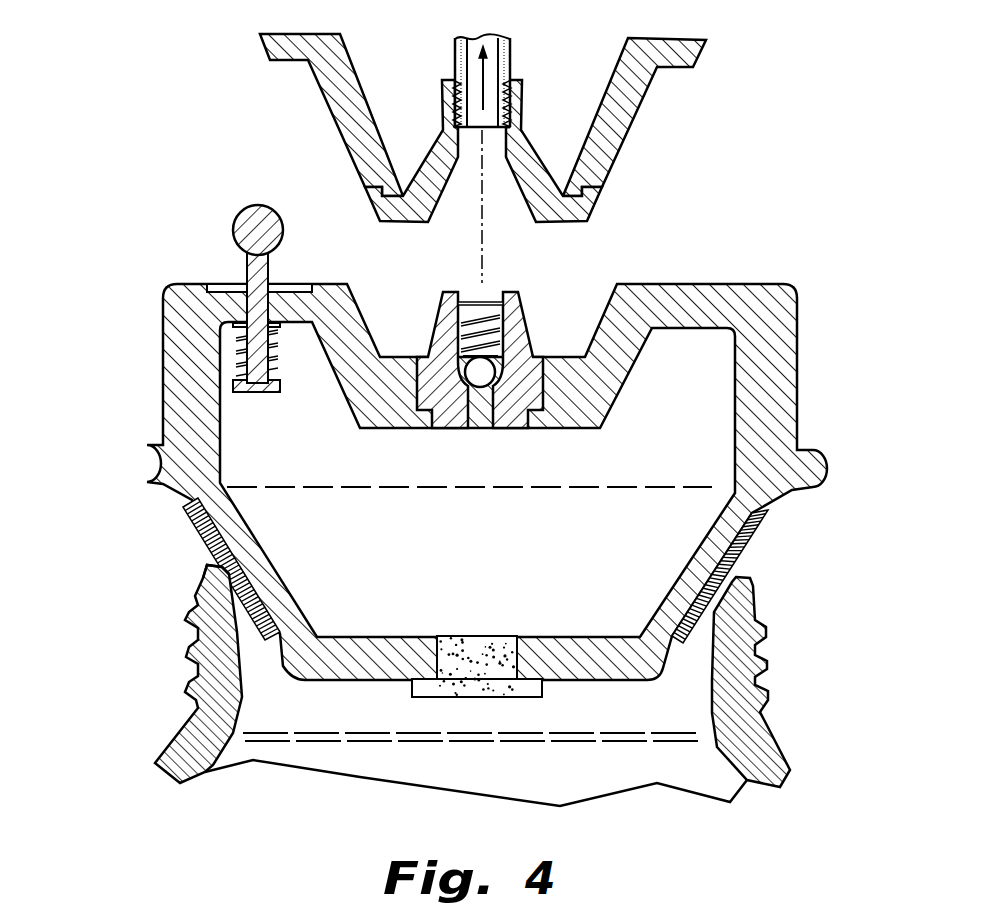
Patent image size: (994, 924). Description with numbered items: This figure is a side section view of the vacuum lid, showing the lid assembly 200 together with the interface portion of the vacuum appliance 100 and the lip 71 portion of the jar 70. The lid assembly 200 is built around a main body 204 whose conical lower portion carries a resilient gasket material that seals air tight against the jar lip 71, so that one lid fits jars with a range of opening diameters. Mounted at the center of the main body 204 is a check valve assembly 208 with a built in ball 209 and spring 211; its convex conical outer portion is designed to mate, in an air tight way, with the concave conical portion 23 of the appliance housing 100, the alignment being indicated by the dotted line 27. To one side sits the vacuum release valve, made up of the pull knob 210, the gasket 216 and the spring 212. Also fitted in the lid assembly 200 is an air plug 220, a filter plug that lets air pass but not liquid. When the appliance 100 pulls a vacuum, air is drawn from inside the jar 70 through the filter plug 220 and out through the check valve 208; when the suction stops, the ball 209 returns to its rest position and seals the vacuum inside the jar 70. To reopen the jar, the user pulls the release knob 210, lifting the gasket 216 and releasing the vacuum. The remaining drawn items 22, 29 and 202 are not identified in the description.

The bottle neck / tube 22 is at (510, 62).
The threads 29 is at (480, 87).
The vacuum appliance 100 is at (748, 17).
The dotted line 27 is at (477, 187).
The concave conical portion 23 is at (522, 187).
The pull knob 210 is at (243, 218).
The gasket 216 is at (225, 284).
The spring 212 is at (233, 368).
The check valve assembly 208 is at (433, 332).
The spring 211 is at (498, 328).
The ball 209 is at (480, 380).
The main body 204 is at (743, 285).
The lid assembly 200 is at (845, 185).
The seal strip 202 is at (186, 517).
The lip 71 is at (212, 565).
The jar 70 is at (200, 703).
The air plug 220 is at (412, 697).